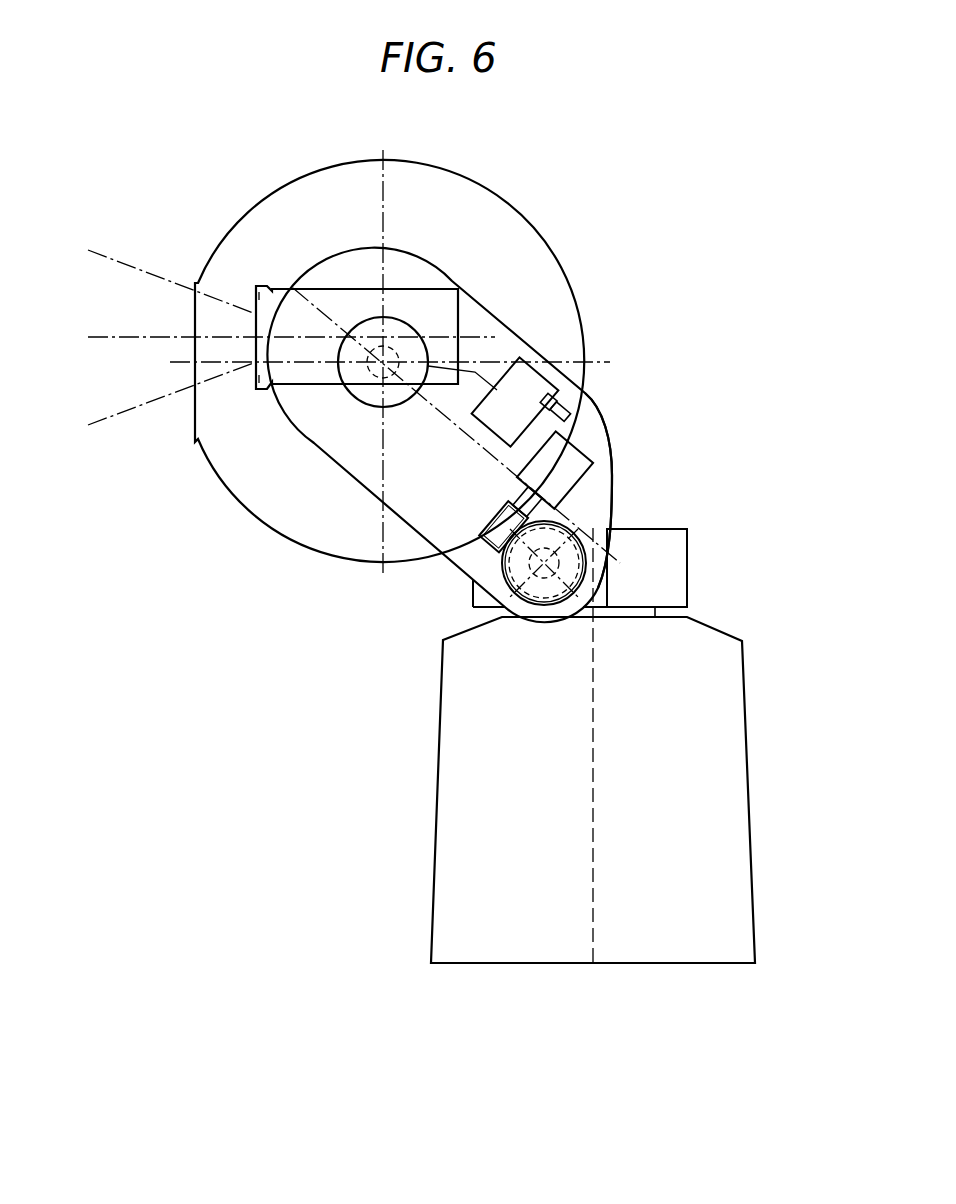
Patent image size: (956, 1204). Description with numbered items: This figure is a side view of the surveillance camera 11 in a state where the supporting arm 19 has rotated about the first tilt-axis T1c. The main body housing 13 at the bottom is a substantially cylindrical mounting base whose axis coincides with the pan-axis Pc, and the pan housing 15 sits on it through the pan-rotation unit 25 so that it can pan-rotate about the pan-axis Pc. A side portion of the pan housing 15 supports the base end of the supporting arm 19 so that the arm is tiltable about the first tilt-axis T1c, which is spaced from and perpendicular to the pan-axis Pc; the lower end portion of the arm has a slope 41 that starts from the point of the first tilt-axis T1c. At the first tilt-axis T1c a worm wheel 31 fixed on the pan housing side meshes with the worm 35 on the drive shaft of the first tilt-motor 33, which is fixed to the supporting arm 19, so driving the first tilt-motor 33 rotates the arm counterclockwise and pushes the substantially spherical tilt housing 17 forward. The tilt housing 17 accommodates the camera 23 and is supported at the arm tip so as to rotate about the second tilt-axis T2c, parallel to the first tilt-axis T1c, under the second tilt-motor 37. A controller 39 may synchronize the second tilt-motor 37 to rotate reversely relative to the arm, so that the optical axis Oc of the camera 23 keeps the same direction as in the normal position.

The surveillance camera 11 is at (228, 168).
The main body housing 13 is at (430, 938).
The pan housing 15 is at (688, 549).
The tilt housing 17 is at (490, 186).
The supporting arm 19 is at (524, 341).
The camera 23 is at (347, 289).
The pan-rotation unit 25 is at (640, 612).
The worm wheel 31 is at (540, 604).
The first tilt-motor 33 is at (577, 450).
The worm 35 is at (485, 530).
The second tilt-motor 37 is at (393, 318).
The controller 39 is at (552, 381).
The slope 41 is at (612, 482).
The first tilt-axis T1c is at (544, 563).
The second tilt-axis T2c is at (383, 362).
The optical axis Oc is at (100, 337).
The pan-axis Pc is at (593, 945).